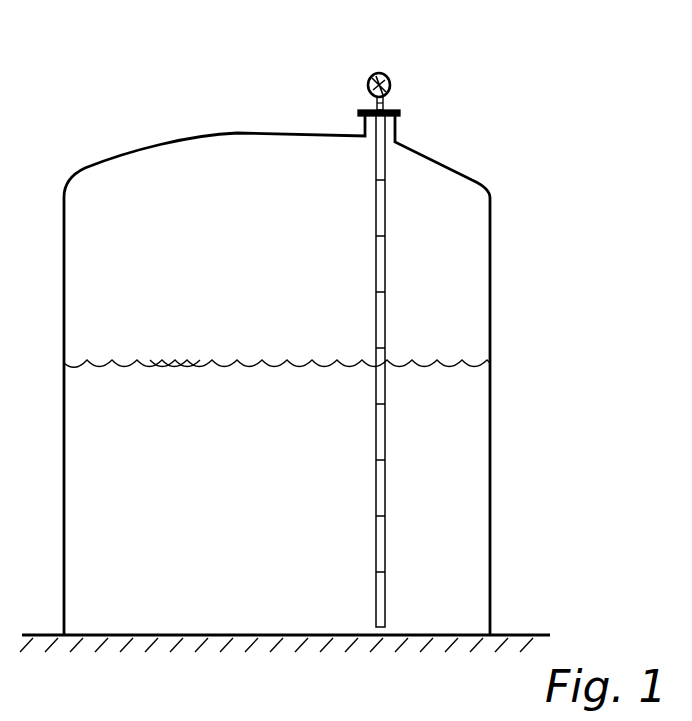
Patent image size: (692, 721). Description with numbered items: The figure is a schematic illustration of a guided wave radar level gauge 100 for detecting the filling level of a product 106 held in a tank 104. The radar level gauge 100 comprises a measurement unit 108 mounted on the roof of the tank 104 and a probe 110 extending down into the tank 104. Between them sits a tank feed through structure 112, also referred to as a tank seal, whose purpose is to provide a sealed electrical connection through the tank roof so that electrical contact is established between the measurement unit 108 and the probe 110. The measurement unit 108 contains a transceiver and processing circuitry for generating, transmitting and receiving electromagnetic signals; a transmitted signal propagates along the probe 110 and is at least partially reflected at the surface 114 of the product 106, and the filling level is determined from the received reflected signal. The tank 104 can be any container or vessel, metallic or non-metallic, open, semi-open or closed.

The guided wave radar level gauge 100 is at (510, 77).
The tank 104 is at (490, 293).
The product 106 is at (262, 513).
The measurement unit 108 is at (388, 77).
The probe 110 is at (376, 267).
The tank feed through structure 112 is at (401, 113).
The surface 114 is at (182, 365).